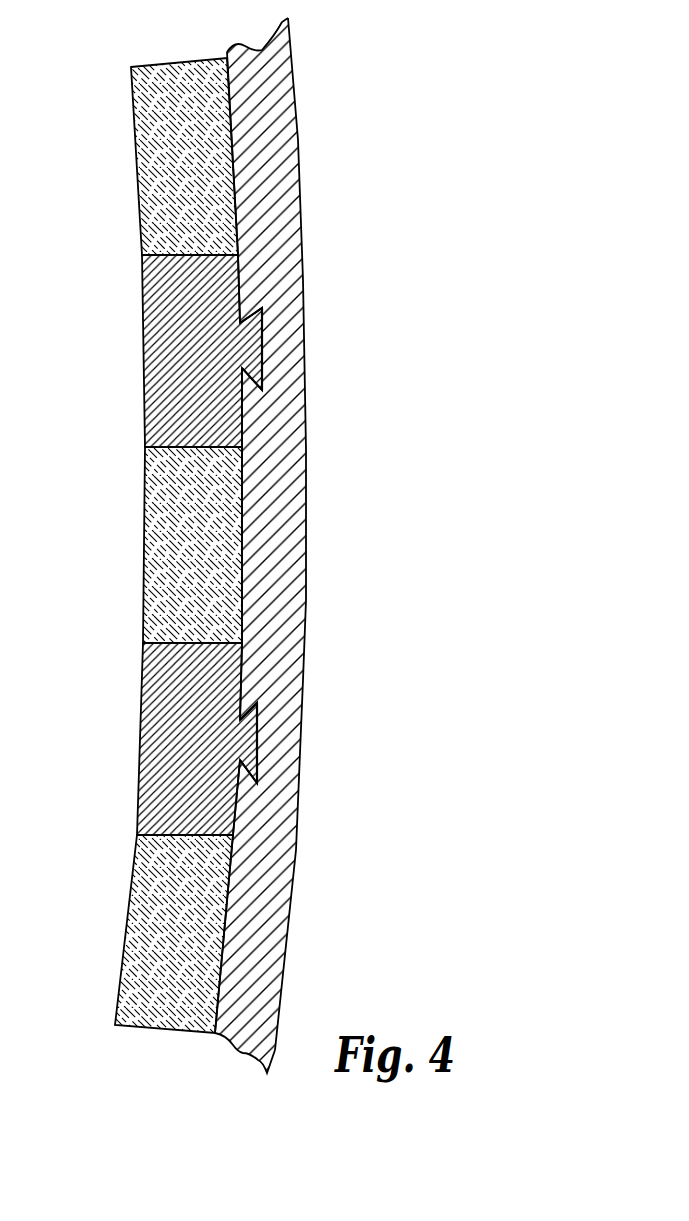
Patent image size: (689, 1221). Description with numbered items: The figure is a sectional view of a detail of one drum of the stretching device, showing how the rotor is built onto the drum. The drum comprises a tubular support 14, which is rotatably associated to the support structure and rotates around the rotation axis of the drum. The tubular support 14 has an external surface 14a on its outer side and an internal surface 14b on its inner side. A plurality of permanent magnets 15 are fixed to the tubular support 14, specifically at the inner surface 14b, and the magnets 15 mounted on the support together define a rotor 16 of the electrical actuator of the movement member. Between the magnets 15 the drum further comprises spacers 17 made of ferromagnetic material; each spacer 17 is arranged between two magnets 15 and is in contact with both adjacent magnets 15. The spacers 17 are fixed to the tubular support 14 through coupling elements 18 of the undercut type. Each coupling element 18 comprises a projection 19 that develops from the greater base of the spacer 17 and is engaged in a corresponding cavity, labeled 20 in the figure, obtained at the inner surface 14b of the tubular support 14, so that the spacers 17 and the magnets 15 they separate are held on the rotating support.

The tubular support 14 is at (289, 71).
The external surface 14a is at (295, 120).
The internal surface 14b is at (237, 285).
The permanent magnet 15 is at (153, 111).
The rotor 16 is at (139, 545).
The spacer 17 is at (165, 372).
The coupling element 18 is at (313, 522).
The projection 19 is at (250, 357).
The tongue 20 is at (262, 330).